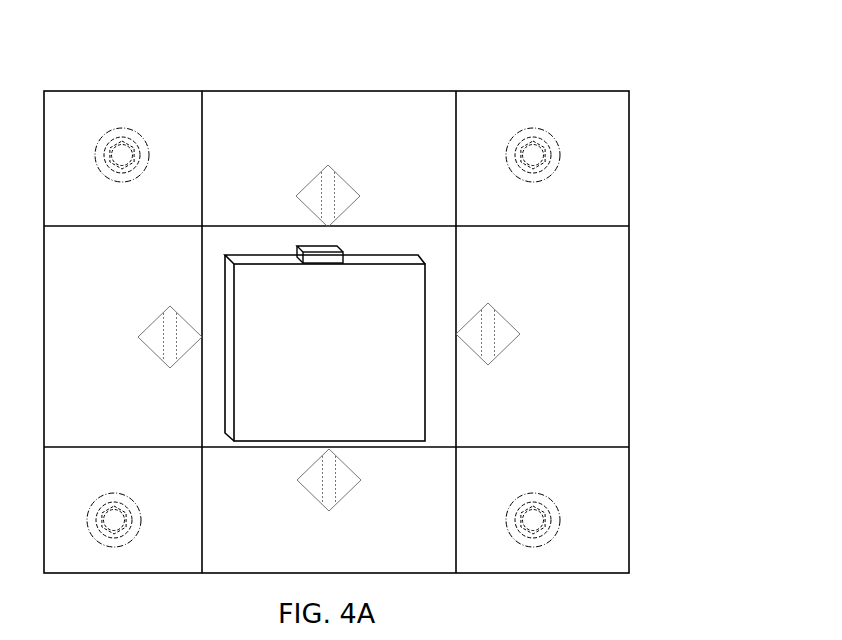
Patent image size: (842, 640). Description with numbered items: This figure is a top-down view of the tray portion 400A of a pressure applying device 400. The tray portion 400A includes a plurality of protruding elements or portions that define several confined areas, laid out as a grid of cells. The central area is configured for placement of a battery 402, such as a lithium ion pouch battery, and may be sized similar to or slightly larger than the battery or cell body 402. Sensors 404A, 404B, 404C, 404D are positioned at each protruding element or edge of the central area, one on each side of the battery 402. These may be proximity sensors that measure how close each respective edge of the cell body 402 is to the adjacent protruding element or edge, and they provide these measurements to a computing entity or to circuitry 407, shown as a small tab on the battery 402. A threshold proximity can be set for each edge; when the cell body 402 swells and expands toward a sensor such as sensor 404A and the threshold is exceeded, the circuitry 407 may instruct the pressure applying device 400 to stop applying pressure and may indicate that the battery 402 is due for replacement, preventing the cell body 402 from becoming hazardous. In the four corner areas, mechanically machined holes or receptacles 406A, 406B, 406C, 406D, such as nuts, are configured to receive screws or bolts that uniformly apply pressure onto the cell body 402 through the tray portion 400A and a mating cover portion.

The pressure applying device 400 is at (656, 56).
The tray portion 400A is at (370, 332).
The battery 402 is at (325, 348).
The sensor 404A is at (504, 355).
The sensor 404B is at (344, 502).
The sensor 404C is at (139, 359).
The sensor 404D is at (345, 183).
The receptacle 406A is at (549, 175).
The receptacle 406B is at (549, 509).
The receptacle 406C is at (129, 509).
The receptacle 406D is at (137, 175).
The circuitry 407 is at (336, 245).